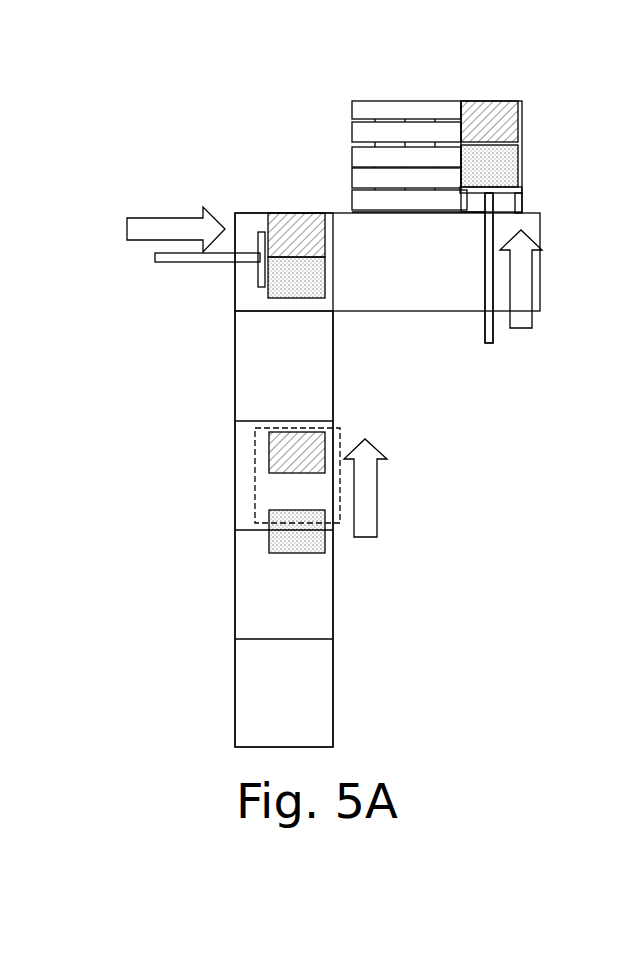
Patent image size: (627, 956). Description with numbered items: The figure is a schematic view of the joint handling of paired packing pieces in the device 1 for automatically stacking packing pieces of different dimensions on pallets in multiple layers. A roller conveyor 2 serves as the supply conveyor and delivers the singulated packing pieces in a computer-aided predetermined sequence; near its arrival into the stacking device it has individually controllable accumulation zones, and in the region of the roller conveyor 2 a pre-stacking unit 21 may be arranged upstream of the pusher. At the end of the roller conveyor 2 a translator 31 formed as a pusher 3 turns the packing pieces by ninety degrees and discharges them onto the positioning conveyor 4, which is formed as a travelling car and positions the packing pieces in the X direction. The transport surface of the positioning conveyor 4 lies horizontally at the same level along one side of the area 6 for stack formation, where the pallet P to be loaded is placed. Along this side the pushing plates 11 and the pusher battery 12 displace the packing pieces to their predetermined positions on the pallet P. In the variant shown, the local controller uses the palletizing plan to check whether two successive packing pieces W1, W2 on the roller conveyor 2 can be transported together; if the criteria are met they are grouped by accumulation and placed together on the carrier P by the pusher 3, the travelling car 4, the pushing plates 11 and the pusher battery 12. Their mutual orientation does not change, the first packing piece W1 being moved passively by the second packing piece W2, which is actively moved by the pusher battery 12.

The device 1 is at (258, 164).
The roller conveyor 2 is at (340, 584).
The pre-stacking unit 21 is at (350, 439).
The pusher 3 is at (122, 261).
The translator 31 is at (205, 263).
The positioning conveyor 4 is at (446, 285).
The stacking area 6 is at (530, 162).
The pallet P is at (526, 98).
The pushing plates 11 is at (493, 347).
The pusher battery 12 is at (493, 347).
The first packing piece W1 is at (275, 442).
The second packing piece W2 is at (265, 536).